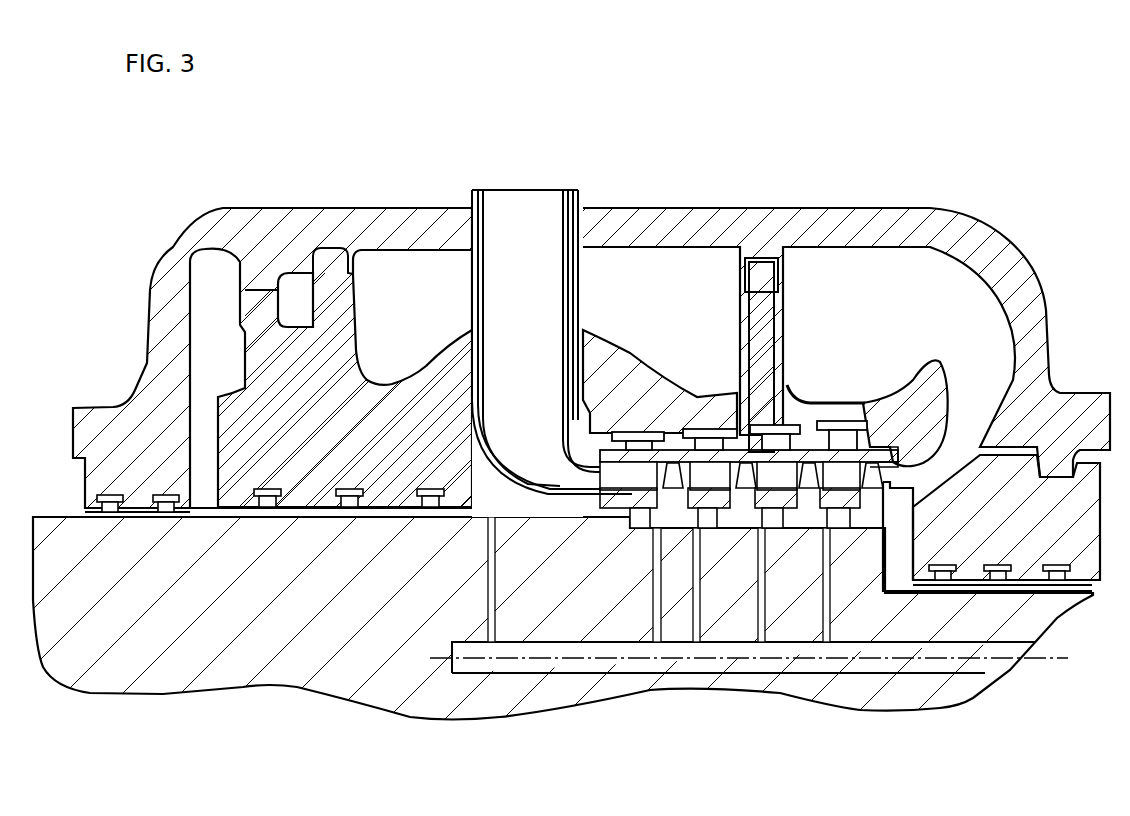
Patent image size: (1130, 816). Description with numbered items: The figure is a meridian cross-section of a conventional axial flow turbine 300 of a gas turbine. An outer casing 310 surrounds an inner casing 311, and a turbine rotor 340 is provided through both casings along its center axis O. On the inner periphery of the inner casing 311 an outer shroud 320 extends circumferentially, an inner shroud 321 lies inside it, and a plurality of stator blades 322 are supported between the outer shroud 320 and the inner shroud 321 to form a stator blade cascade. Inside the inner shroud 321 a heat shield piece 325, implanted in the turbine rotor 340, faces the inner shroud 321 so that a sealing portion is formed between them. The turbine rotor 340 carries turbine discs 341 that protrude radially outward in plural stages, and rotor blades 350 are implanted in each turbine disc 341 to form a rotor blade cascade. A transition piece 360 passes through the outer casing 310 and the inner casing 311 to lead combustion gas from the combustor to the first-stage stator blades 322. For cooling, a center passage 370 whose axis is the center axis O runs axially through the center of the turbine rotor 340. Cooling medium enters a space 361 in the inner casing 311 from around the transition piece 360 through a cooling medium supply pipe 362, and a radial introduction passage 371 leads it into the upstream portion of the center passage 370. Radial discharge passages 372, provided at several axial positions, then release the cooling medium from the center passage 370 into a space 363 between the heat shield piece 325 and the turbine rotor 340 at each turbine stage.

The axial flow turbine 300 is at (1005, 185).
The outer casing 310 is at (845, 213).
The inner casing 311 is at (627, 373).
The outer shroud 320 is at (710, 473).
The inner shroud 321 is at (723, 497).
The stator blades 322 is at (708, 477).
The heat shield piece 325 is at (727, 507).
The turbine rotor 340 is at (295, 663).
The turbine discs 341 is at (740, 467).
The rotor blades 350 is at (740, 467).
The transition piece 360 is at (548, 494).
The space 361 is at (493, 497).
The cooling medium supply pipe 362 is at (468, 282).
The space 363 is at (697, 527).
The center passage 370 is at (893, 670).
The introduction passage 371 is at (488, 600).
The discharge passages 372 is at (653, 605).
The center axis O is at (953, 660).